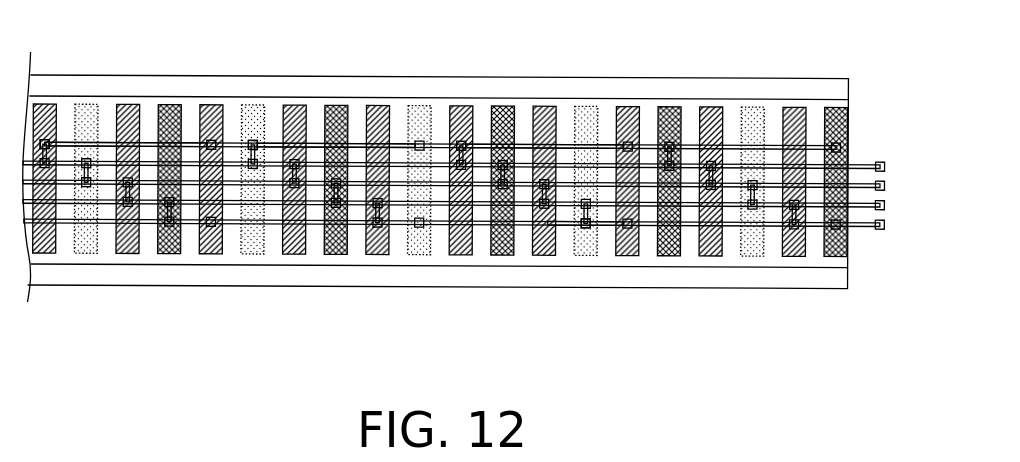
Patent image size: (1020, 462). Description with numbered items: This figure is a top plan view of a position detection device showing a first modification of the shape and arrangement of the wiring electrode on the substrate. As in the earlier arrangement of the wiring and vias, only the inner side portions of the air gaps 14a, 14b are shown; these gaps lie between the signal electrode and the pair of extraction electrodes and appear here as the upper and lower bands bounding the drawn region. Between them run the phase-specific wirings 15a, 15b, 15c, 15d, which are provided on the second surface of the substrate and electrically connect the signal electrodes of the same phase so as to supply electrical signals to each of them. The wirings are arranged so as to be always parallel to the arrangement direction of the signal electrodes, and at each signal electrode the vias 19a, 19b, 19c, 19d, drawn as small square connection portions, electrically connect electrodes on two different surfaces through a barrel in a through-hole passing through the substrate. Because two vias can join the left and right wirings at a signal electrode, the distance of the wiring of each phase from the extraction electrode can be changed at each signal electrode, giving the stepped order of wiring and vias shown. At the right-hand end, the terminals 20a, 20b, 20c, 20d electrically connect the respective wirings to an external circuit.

The air gap 14a is at (790, 290).
The air gap 14b is at (803, 78).
The wiring 15a is at (66, 141).
The wiring 15b is at (276, 141).
The wiring 15c is at (485, 141).
The wiring 15d is at (561, 228).
The via 19a is at (47, 141).
The via 19b is at (251, 141).
The via 19c is at (460, 141).
The via 19d is at (588, 228).
The terminal 20a is at (881, 162).
The terminal 20b is at (886, 187).
The terminal 20c is at (886, 205).
The terminal 20d is at (881, 231).